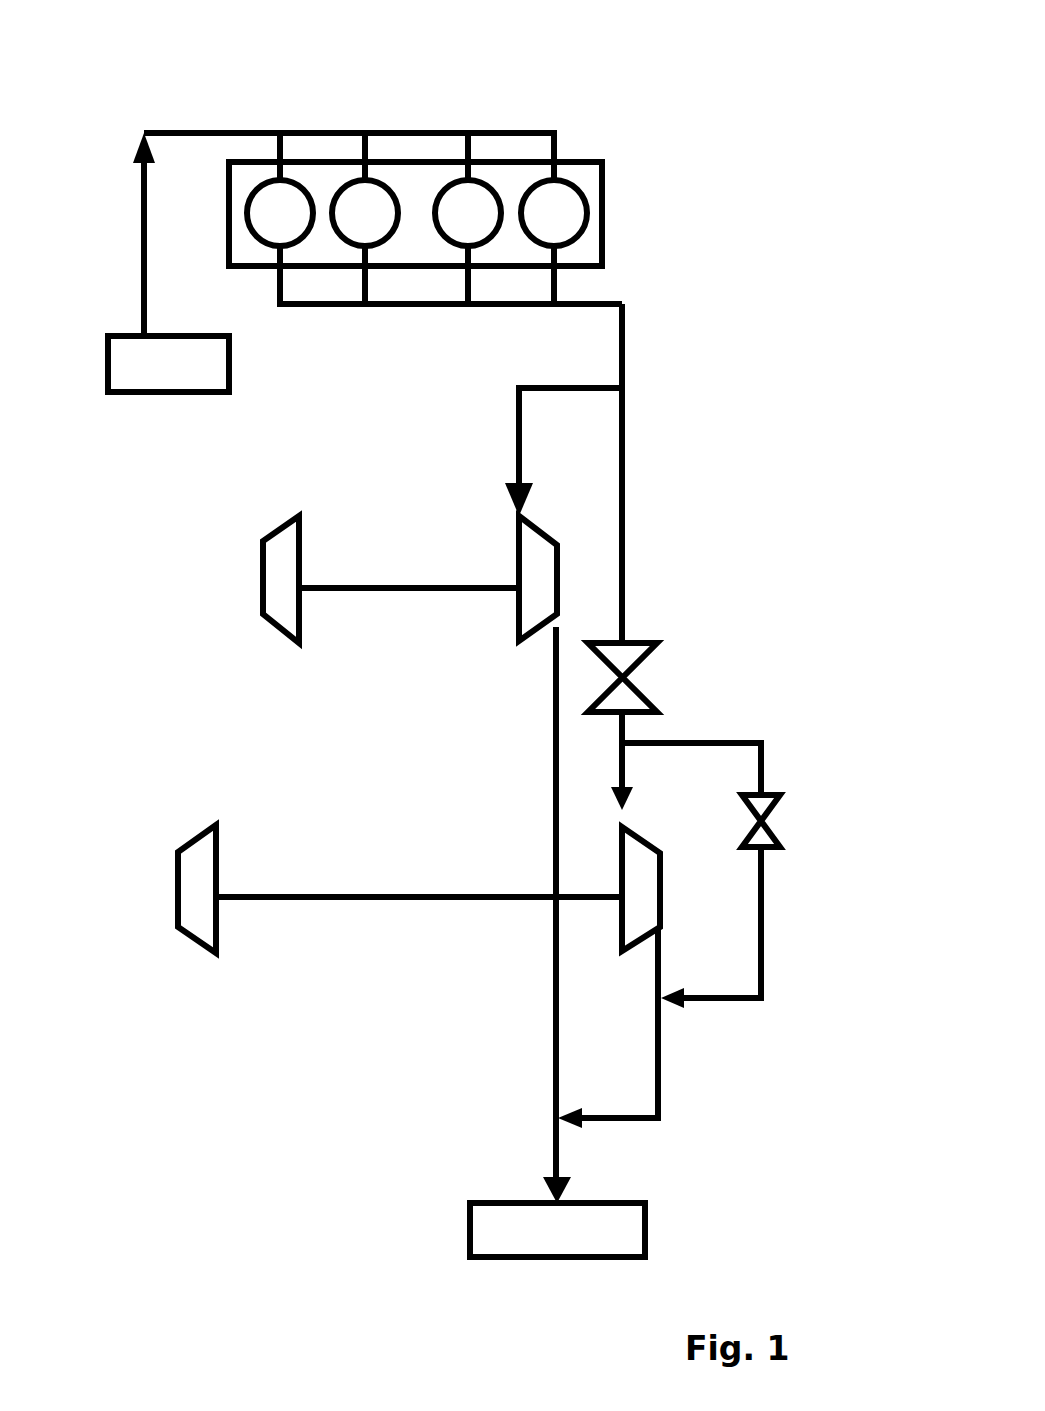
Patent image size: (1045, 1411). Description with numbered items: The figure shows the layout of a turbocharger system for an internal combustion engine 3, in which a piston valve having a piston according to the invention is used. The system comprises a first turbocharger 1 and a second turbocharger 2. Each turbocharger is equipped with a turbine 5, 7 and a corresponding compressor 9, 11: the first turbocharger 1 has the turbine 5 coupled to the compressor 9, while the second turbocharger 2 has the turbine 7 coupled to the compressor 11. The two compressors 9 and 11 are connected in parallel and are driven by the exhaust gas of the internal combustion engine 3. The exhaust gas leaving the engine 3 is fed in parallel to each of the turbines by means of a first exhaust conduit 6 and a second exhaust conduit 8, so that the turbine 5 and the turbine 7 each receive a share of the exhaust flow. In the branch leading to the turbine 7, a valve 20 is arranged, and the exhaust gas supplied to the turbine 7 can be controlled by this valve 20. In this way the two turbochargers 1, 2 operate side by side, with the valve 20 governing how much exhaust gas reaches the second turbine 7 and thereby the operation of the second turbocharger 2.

The first turbocharger 1 is at (356, 553).
The second turbocharger 2 is at (462, 845).
The internal combustion engine 3 is at (597, 106).
The turbine 5 is at (533, 552).
The first exhaust conduit 6 is at (590, 388).
The turbine 7 is at (646, 912).
The second exhaust conduit 8 is at (627, 520).
The compressor 9 is at (283, 580).
The compressor 11 is at (190, 897).
The valve 20 is at (629, 636).